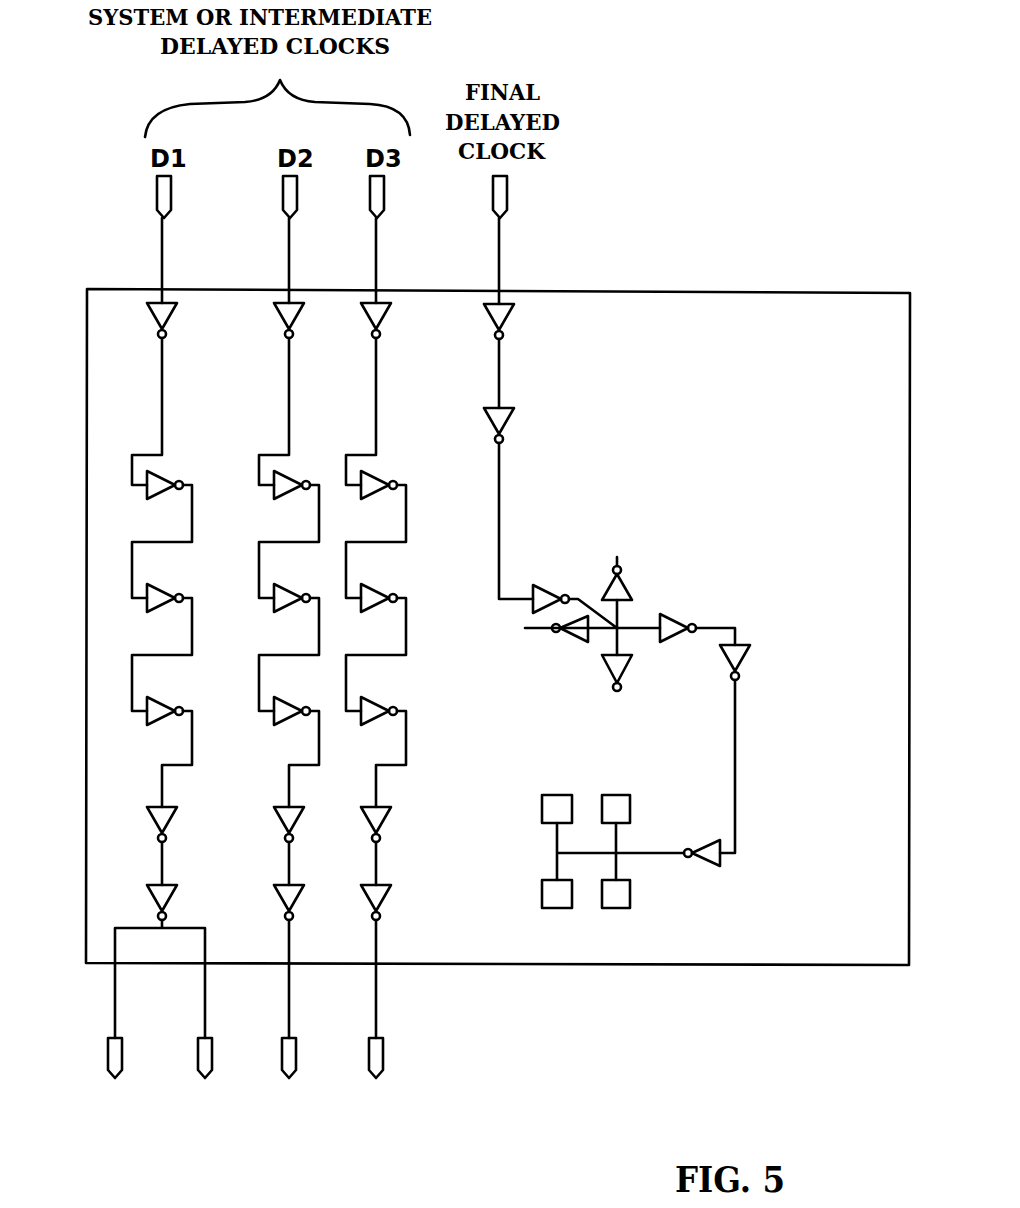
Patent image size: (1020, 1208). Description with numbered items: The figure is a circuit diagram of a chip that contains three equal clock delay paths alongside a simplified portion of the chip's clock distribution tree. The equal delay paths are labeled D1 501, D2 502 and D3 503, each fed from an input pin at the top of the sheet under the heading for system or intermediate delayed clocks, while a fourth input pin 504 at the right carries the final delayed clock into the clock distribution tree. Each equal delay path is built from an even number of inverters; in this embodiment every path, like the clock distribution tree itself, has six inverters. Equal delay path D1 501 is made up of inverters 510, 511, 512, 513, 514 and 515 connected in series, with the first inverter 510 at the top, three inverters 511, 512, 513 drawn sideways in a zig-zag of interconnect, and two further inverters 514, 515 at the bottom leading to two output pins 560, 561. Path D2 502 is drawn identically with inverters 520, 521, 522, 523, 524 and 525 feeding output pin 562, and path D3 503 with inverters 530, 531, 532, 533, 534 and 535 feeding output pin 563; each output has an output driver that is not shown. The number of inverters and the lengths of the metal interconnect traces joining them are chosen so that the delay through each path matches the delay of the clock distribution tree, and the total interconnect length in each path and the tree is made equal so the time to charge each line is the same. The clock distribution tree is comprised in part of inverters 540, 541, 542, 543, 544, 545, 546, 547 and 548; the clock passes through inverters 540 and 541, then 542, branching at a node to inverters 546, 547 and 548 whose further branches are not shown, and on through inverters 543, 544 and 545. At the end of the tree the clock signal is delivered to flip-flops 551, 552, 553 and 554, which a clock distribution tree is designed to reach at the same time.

The equal delay path D1 501 is at (156, 203).
The equal delay path D2 502 is at (283, 203).
The equal delay path D3 503 is at (370, 203).
The final delayed clock input terminal 504 is at (493, 207).
The inverter 510 is at (153, 319).
The inverter 511 is at (163, 479).
The inverter 512 is at (163, 592).
The inverter 513 is at (163, 705).
The inverter 514 is at (146, 817).
The inverter 515 is at (146, 895).
The inverter 520 is at (281, 319).
The inverter 521 is at (277, 479).
The inverter 522 is at (277, 592).
The inverter 523 is at (277, 705).
The inverter 524 is at (273, 815).
The inverter 525 is at (273, 893).
The inverter 530 is at (368, 319).
The inverter 531 is at (364, 479).
The inverter 532 is at (364, 592).
The inverter 533 is at (364, 705).
The inverter 534 is at (360, 815).
The inverter 535 is at (360, 893).
The inverter 540 is at (490, 320).
The inverter 541 is at (490, 424).
The inverter 542 is at (565, 579).
The inverter 543 is at (678, 622).
The inverter 544 is at (725, 660).
The inverter 545 is at (700, 864).
The inverter 546 is at (628, 586).
The inverter 547 is at (605, 668).
The inverter 548 is at (567, 643).
The flip-flop 551 is at (618, 795).
The flip-flop 552 is at (612, 910).
The flip-flop 553 is at (556, 910).
The flip-flop 554 is at (560, 795).
The output terminal 560 is at (106, 1057).
The output terminal 561 is at (197, 1057).
The output terminal 562 is at (281, 1057).
The output terminal 563 is at (368, 1057).